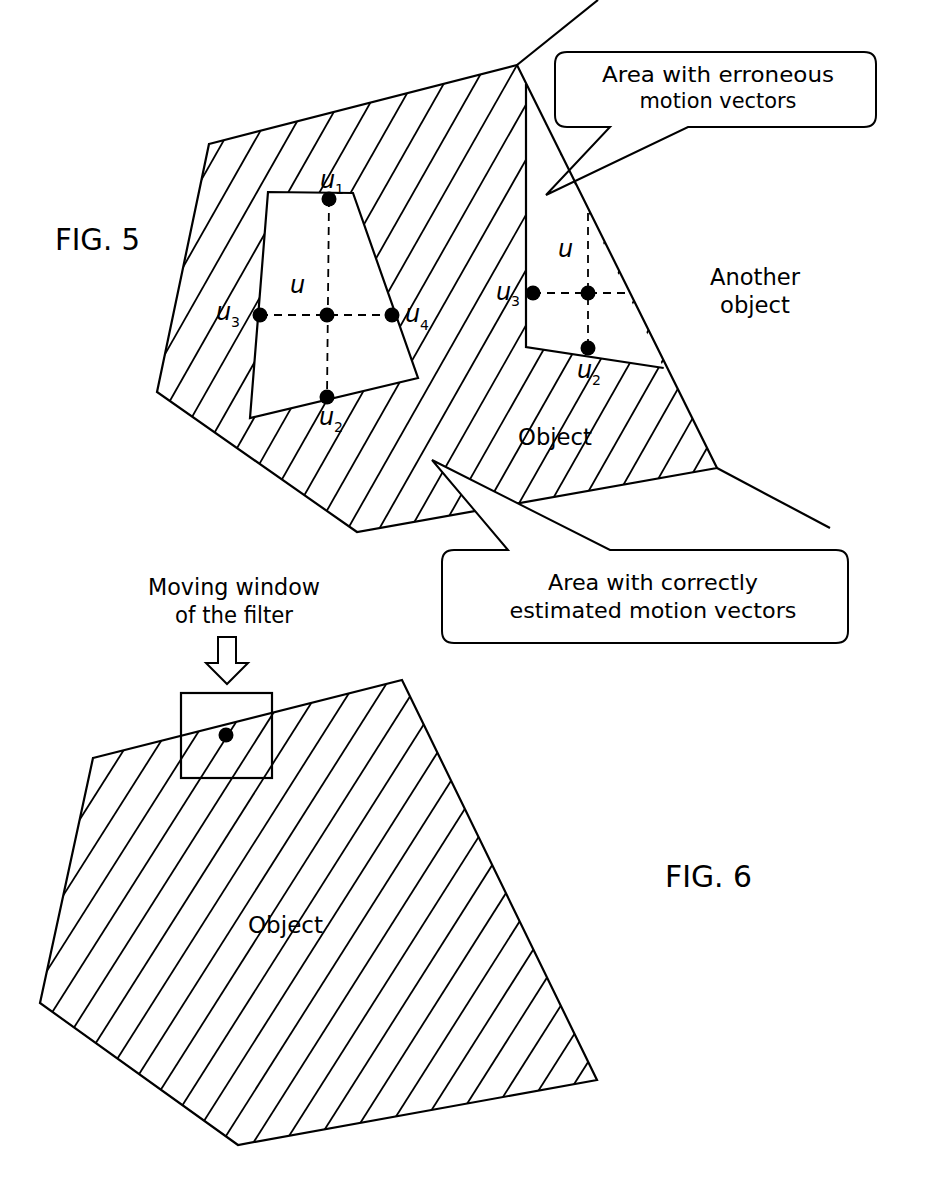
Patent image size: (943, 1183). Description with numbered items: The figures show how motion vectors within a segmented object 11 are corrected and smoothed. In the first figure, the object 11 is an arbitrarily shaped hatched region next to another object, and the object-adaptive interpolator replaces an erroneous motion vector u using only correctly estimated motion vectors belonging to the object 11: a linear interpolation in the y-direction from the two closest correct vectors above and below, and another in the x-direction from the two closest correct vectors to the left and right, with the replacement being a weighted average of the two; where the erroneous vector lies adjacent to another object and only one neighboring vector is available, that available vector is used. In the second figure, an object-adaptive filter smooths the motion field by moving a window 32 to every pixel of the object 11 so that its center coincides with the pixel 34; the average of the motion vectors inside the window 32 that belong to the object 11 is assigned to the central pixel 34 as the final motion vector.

In FIG. 5, the object 11 is at (393, 100).
In FIG. 6, the object 11 is at (115, 1060).
In FIG. 6, the window 32 is at (181, 715).
In FIG. 6, the pixel 34 is at (233, 728).